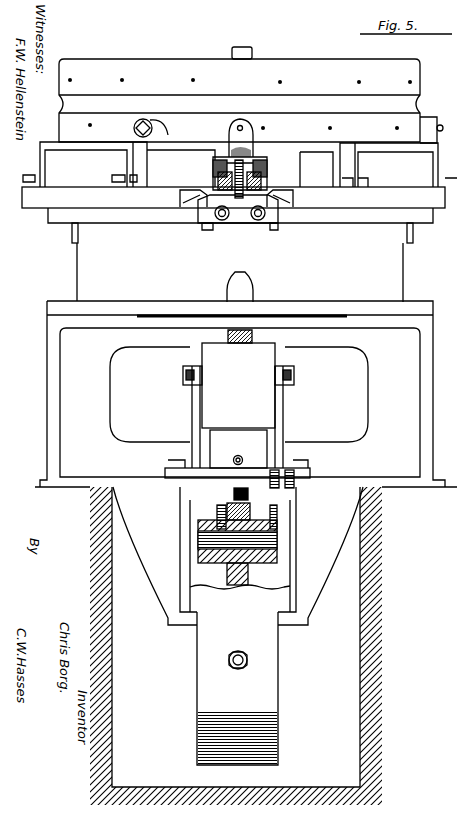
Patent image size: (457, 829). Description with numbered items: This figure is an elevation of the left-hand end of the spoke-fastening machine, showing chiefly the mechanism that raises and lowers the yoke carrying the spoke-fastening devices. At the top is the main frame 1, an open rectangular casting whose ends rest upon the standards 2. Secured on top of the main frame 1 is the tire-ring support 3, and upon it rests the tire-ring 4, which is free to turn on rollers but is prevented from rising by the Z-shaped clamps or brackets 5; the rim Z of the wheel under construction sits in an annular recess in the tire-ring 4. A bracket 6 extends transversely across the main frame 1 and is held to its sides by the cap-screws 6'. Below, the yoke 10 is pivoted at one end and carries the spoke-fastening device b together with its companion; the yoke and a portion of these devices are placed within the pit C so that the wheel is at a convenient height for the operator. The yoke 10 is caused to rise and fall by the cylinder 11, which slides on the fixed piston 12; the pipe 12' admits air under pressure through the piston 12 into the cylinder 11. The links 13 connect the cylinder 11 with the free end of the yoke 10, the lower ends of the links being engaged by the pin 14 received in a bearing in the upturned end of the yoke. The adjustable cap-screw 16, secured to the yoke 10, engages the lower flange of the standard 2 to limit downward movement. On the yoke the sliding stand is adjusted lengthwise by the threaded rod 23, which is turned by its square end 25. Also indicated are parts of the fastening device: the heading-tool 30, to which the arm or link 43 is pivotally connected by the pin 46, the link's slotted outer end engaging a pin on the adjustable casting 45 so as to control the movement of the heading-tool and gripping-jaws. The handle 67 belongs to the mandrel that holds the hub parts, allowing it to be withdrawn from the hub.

The main frame 1 is at (281, 278).
The standards 2 is at (246, 394).
The tire-ring support 3 is at (316, 193).
The tire-ring 4 is at (181, 168).
The Z-shaped clamps or brackets 5 is at (133, 161).
The bracket 6 is at (229, 216).
The cap-screws 6' is at (237, 236).
The yoke 10 is at (250, 698).
The cylinder 11 is at (250, 414).
The fixed piston 12 is at (238, 449).
The pipe 12' is at (228, 461).
The links 13 is at (192, 408).
The pin 14 is at (212, 540).
The adjustable cap-screw 16 is at (242, 494).
The threaded rod 23 is at (229, 663).
The square end 25 is at (239, 652).
The heading-tool 30 is at (254, 137).
The arm or link 43 is at (268, 166).
The adjustable casting 45 is at (262, 186).
The pin 46 is at (213, 172).
The handle 67 is at (242, 43).
The rim Z is at (251, 101).
The spoke-fastening device b is at (228, 128).
The pit C is at (236, 646).